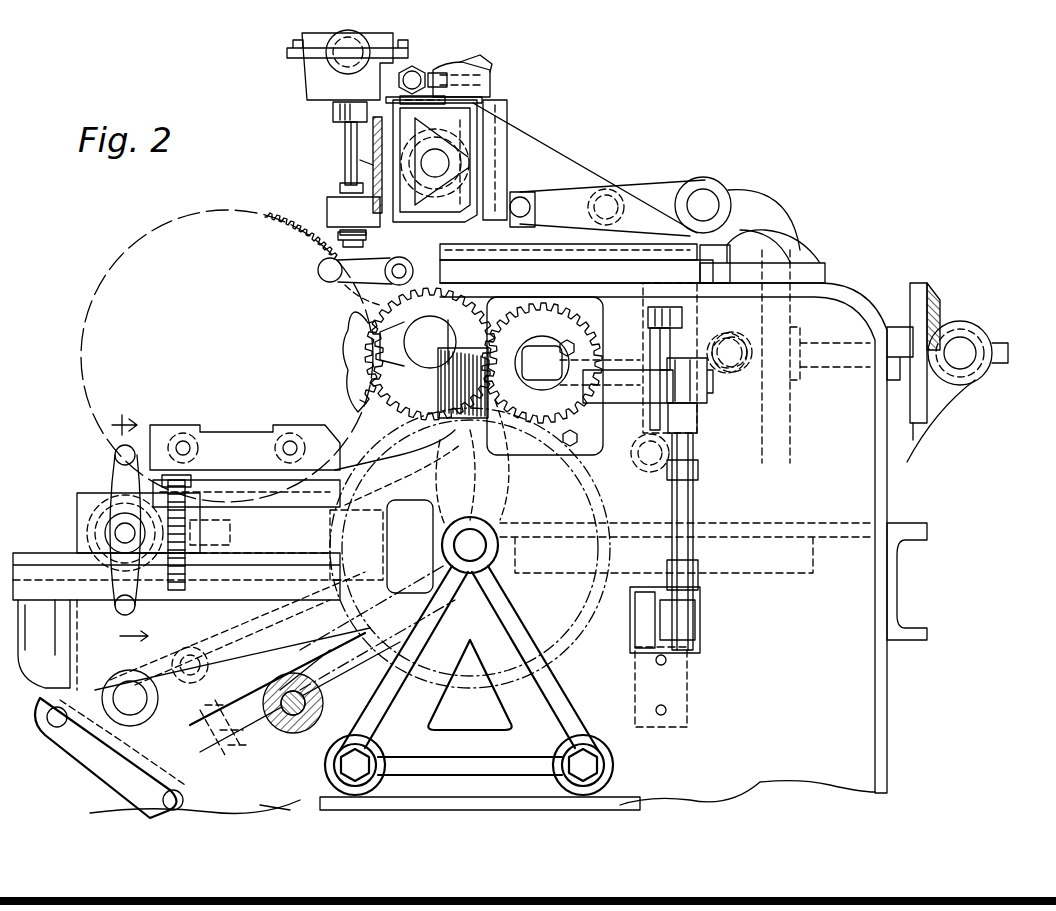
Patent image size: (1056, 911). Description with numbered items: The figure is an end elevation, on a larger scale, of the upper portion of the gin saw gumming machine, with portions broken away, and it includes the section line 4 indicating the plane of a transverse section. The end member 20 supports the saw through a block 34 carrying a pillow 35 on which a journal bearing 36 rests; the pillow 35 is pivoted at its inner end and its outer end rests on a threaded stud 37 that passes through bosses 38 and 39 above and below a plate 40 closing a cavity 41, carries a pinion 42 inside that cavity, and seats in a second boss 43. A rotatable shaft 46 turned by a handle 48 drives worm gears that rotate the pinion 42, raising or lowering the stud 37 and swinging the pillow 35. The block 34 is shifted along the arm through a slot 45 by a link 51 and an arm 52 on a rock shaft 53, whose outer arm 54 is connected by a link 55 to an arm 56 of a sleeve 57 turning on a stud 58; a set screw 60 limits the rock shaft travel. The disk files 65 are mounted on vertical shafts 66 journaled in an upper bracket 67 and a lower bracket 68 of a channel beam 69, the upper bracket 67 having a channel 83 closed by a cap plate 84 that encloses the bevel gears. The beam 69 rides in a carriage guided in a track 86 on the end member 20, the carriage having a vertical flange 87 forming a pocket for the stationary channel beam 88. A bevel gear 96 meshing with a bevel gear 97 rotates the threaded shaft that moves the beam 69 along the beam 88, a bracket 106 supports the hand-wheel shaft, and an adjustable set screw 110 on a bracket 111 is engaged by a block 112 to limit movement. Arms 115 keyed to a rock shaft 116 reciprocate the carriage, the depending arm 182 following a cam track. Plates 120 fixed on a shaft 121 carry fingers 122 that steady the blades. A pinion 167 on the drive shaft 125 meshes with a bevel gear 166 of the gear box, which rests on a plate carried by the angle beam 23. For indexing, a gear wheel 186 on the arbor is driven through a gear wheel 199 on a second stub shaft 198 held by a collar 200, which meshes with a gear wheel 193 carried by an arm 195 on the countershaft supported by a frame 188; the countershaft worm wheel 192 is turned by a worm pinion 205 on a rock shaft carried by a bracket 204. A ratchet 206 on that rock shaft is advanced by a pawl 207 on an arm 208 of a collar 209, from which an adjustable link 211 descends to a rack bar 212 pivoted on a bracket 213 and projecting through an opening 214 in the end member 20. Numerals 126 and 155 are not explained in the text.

The section line 4- 4 is at (136, 521).
The end member 20 is at (488, 532).
The angle beam 23 is at (900, 603).
The block 34 is at (246, 493).
The pillow 35 is at (245, 447).
The journal bearing 36 is at (335, 485).
The stud 37 is at (160, 450).
The boss 38 is at (190, 478).
The boss 39 is at (222, 528).
The plate 40 is at (98, 495).
The cavity 41 is at (90, 515).
The pinion 42 is at (237, 543).
The second boss 43 is at (215, 572).
The slot 45 is at (160, 590).
The rotatable shaft 46 is at (120, 533).
The handle 48 is at (112, 612).
The link 51 is at (240, 635).
The arm 52 is at (247, 676).
The rock shaft 53 is at (130, 698).
The arm 54 is at (70, 692).
The link 55 is at (108, 770).
The arm 56 is at (240, 750).
The sleeve 57 is at (324, 705).
The stud 58 is at (305, 688).
The set screw 60 is at (255, 790).
The disk file 65 is at (368, 246).
The vertical shaft 66 is at (345, 146).
The upper bracket 67 is at (307, 80).
The lower bracket 68 is at (353, 215).
The channel beam 69 is at (360, 106).
The channel 83 is at (568, 251).
The cap plate 84 is at (302, 36).
The track 86 is at (585, 264).
The vertical flange 87 is at (492, 138).
The channel beam 88 is at (484, 102).
The bevel gear 96 is at (508, 104).
The bevel gear 97 is at (478, 160).
The bracket 106 is at (360, 162).
The adjustable set screw 110 is at (428, 78).
The bracket 111 is at (470, 68).
The block 112 is at (420, 66).
The arm 115 is at (642, 190).
The rock shaft 116 is at (710, 200).
The plate 120 is at (320, 265).
The shaft 121 is at (355, 300).
The finger 122 is at (340, 283).
The drive shaft 125 is at (985, 340).
The bracket 126 is at (915, 440).
The spring 155 is at (482, 80).
The bevel gear 166 is at (930, 290).
The pinion 167 is at (960, 330).
The arm 182 is at (750, 245).
The gear wheel 186 is at (352, 370).
The frame 188 is at (469, 656).
The worm wheel 192 is at (450, 450).
The gear wheel 193 is at (540, 425).
The arm 195 is at (450, 478).
The second stub shaft 198 is at (420, 336).
The gear wheel 199 is at (431, 354).
The collar 200 is at (440, 385).
The bracket 204 is at (585, 438).
The worm pinion 205 is at (445, 408).
The ratchet 206 is at (655, 378).
The pawl 207 is at (648, 318).
The arm 208 is at (680, 348).
The collar 209 is at (698, 382).
The adjustable link 211 is at (695, 462).
The rack bar 212 is at (660, 620).
The bracket 213 is at (640, 645).
The opening 214 is at (648, 595).